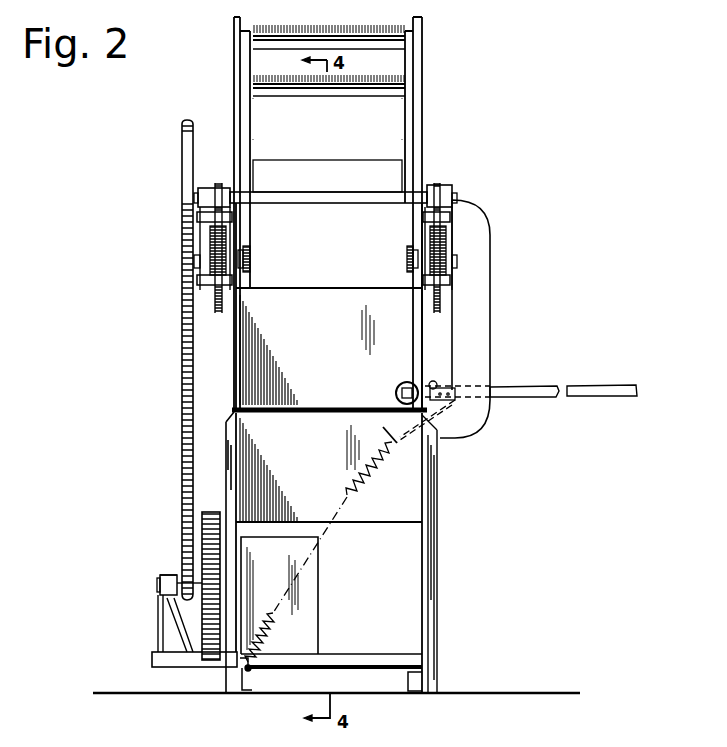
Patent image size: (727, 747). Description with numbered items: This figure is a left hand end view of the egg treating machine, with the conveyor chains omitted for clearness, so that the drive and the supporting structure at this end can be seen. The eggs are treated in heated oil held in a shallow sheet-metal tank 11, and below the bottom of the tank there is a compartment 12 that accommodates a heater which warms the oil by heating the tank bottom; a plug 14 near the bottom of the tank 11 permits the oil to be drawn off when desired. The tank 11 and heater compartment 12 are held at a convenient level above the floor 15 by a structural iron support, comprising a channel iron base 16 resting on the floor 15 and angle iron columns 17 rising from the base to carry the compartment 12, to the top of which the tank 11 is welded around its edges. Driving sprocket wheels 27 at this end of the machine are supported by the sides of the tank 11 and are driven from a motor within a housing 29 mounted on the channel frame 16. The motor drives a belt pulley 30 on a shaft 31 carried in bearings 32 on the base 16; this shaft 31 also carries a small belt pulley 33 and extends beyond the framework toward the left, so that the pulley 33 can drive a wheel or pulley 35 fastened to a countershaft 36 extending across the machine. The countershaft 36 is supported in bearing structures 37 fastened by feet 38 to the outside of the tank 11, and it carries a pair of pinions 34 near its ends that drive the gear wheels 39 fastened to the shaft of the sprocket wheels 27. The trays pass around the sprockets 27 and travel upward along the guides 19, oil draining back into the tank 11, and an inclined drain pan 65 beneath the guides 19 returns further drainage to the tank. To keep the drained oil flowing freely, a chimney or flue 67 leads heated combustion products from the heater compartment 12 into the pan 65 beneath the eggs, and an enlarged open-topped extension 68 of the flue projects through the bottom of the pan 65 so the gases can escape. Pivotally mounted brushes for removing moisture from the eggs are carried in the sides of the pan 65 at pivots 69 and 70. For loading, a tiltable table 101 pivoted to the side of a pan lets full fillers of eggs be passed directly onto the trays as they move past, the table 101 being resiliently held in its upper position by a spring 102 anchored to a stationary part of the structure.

The tank 11 is at (400, 355).
The heater compartment 12 is at (412, 491).
The plug 14 is at (396, 390).
The floor 15 is at (483, 692).
The channel iron base 16 is at (252, 690).
The angle iron columns 17 is at (226, 680).
The guides 19 is at (233, 65).
The driving sprocket wheels 27 is at (250, 280).
The housing 29 is at (318, 613).
The belt pulley 30 is at (210, 512).
The shaft 31 is at (157, 588).
The bearings 32 is at (160, 576).
The small belt pulley 33 is at (188, 607).
The pinions 34 is at (219, 186).
The wheel or pulley 35 is at (182, 175).
The countershaft 36 is at (300, 197).
The bearing structures 37 is at (205, 238).
The feet 38 is at (210, 220).
The gear wheels 39 is at (232, 312).
The inclined drain pan 65 is at (395, 137).
The chimney or flue 67 is at (492, 368).
The enlarged extension 68 is at (330, 158).
The brush pivot 69 is at (346, 88).
The brush pivot 70 is at (356, 36).
The tiltable table 101 is at (596, 392).
The spring 102 is at (367, 505).